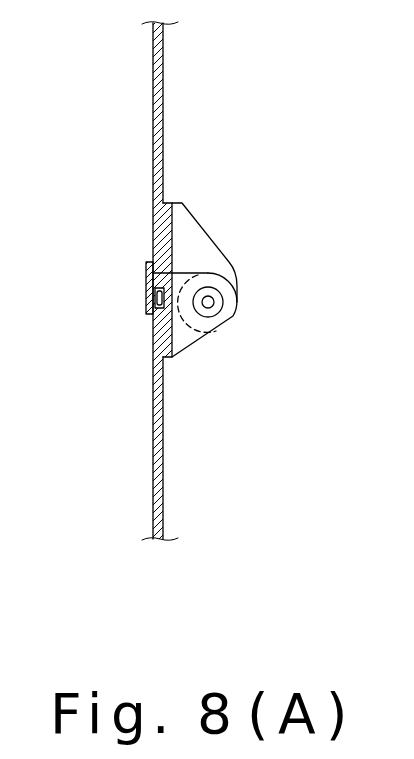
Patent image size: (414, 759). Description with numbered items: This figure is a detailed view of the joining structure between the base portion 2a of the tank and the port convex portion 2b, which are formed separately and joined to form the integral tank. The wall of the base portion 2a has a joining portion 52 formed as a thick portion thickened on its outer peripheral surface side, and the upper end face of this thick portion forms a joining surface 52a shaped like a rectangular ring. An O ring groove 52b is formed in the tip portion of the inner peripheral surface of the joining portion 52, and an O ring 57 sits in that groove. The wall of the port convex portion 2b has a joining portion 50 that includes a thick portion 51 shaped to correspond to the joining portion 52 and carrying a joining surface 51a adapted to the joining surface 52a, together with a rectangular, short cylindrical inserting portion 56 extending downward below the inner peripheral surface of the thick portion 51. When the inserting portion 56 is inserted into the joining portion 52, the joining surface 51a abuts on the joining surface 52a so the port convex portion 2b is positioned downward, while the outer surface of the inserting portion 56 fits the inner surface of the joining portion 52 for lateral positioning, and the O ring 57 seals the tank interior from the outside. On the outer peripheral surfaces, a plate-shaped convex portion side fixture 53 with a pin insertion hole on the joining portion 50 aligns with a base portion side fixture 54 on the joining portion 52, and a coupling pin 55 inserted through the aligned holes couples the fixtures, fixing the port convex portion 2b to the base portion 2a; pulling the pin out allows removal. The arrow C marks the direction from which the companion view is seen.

The base portion 2a is at (163, 483).
The port convex portion 2b is at (163, 72).
The joining portion 50 is at (179, 232).
The thick portion 51 is at (165, 200).
The joining surface 51a is at (193, 272).
The joining portion 52 is at (185, 351).
The joining surface 52a is at (153, 252).
The O ring groove 52b is at (153, 335).
The convex portion side fixture 53 is at (223, 267).
The base portion side fixture 54 is at (203, 331).
The coupling pin 55 is at (214, 303).
The inserting portion 56 is at (150, 270).
The O ring 57 is at (155, 298).
The arrow C is at (269, 297).